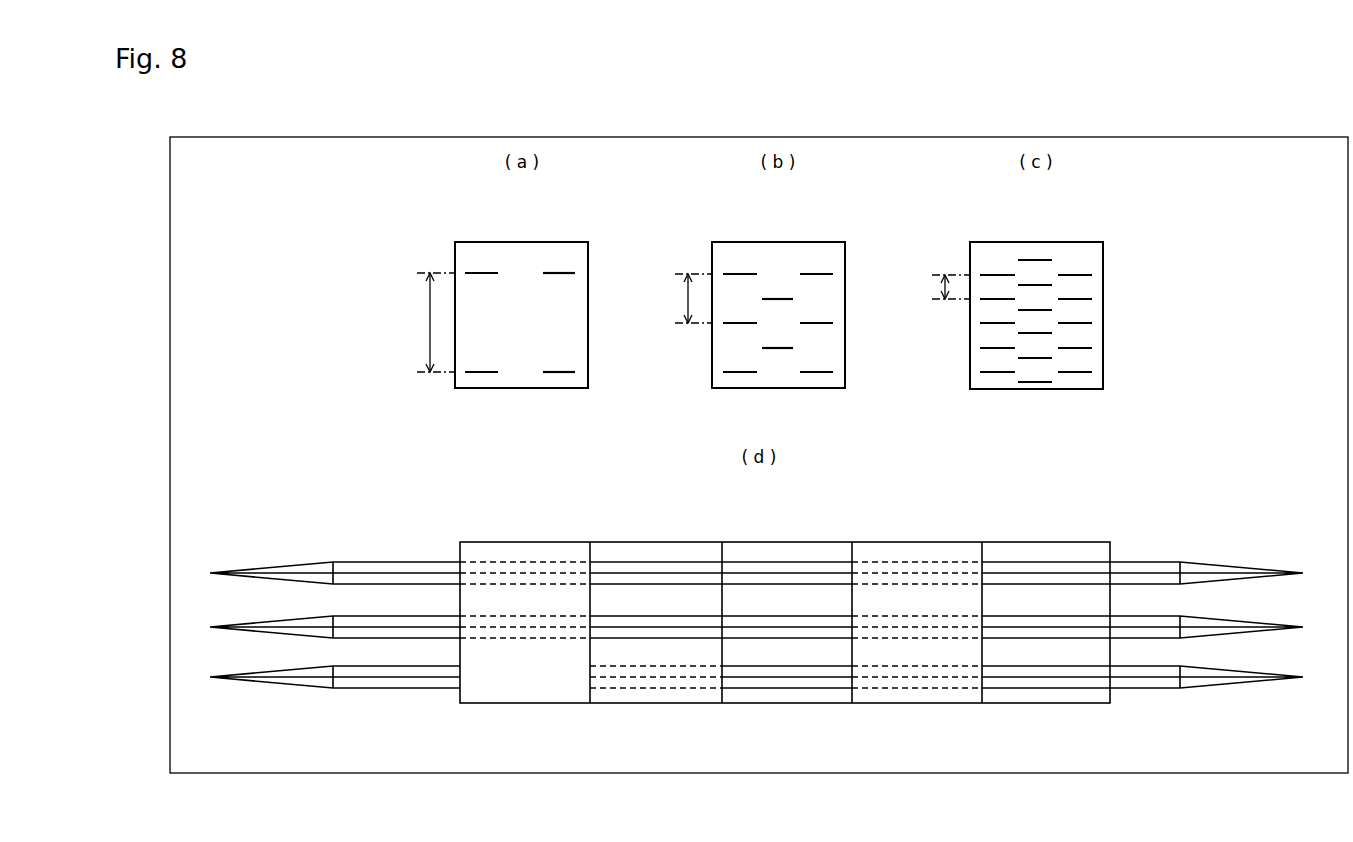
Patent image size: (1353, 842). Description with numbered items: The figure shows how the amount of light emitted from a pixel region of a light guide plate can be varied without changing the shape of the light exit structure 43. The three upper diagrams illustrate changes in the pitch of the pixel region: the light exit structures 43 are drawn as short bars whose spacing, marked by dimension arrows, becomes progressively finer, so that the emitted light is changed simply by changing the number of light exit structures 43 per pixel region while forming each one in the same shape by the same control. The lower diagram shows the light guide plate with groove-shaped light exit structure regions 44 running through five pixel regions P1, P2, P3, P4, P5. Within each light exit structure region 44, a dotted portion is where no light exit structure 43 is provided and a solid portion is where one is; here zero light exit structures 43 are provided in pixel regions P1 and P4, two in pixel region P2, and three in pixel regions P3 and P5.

The light exit structure 43 is at (787, 477).
The light exit structure region 44 is at (880, 585).
The pixel region P1 is at (527, 542).
The pixel region P2 is at (659, 542).
The pixel region P3 is at (789, 542).
The pixel region P4 is at (917, 542).
The pixel region P5 is at (1047, 542).